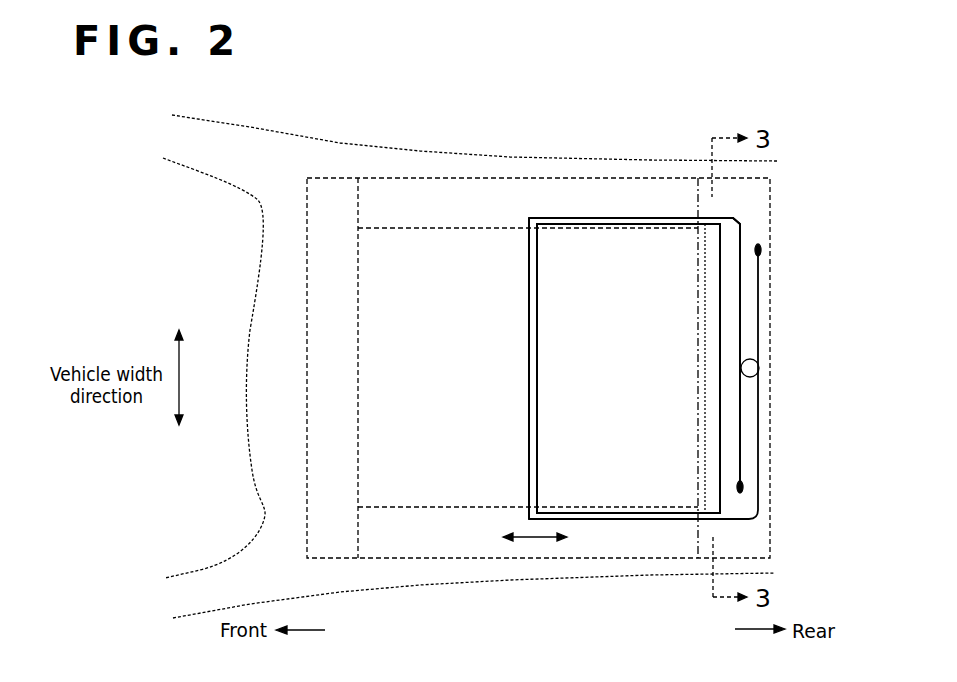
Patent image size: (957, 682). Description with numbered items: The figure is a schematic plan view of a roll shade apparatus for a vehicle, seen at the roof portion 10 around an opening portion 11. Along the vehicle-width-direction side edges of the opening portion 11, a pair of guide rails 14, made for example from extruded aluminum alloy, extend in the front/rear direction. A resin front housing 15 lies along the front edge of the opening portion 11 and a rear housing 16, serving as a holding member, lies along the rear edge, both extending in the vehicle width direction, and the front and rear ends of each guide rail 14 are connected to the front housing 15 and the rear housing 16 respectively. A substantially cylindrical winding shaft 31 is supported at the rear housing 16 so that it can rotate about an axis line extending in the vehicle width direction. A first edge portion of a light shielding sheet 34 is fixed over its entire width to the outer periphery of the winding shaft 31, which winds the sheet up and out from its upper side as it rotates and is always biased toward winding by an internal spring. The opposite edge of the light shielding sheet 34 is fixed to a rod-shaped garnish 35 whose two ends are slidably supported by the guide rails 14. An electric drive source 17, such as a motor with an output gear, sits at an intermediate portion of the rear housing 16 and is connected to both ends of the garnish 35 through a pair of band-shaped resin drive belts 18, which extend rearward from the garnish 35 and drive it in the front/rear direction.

The roof portion 10 is at (420, 150).
The opening portion 11 is at (434, 386).
The guide rail 14 is at (375, 178).
The front housing 15 is at (307, 277).
The rear housing 16 is at (772, 400).
The electric drive source 17 is at (757, 358).
The drive belt 18 is at (588, 218).
The winding shaft 31 is at (713, 514).
The light shielding sheet 34 is at (545, 373).
The garnish 35 is at (528, 335).